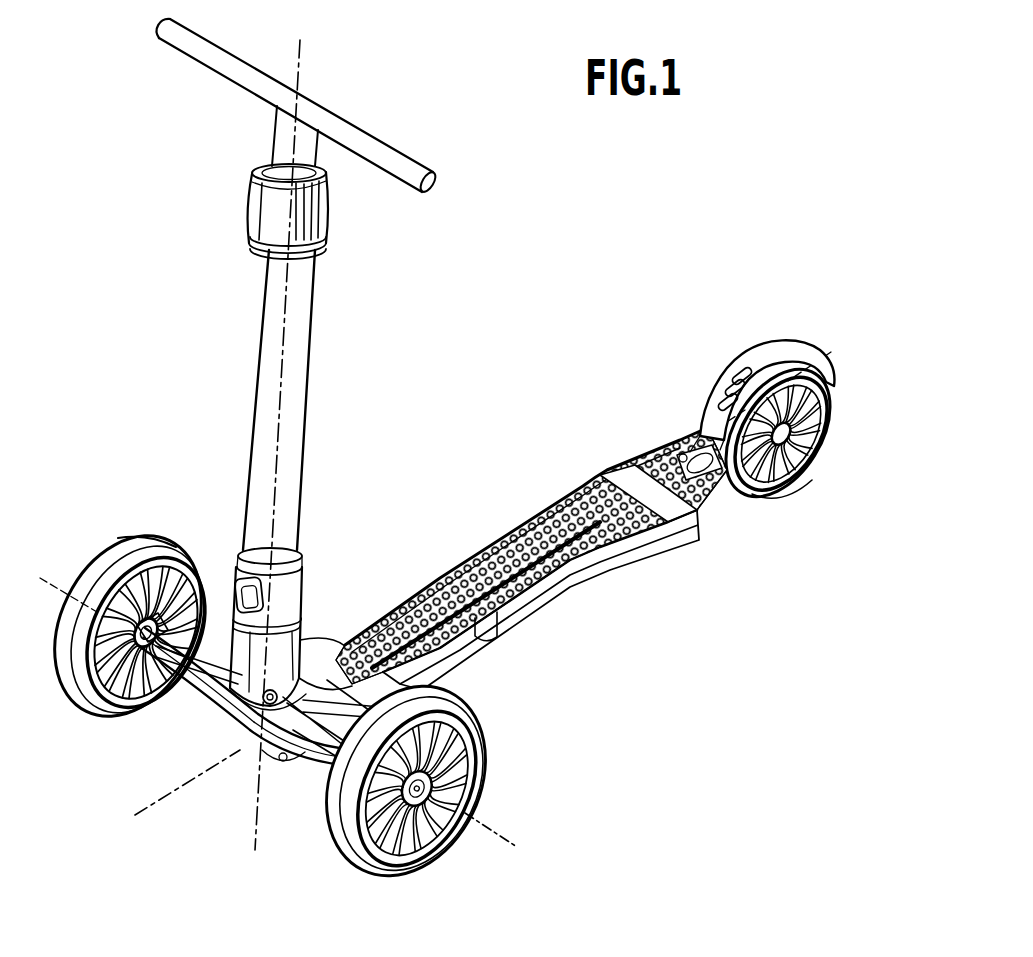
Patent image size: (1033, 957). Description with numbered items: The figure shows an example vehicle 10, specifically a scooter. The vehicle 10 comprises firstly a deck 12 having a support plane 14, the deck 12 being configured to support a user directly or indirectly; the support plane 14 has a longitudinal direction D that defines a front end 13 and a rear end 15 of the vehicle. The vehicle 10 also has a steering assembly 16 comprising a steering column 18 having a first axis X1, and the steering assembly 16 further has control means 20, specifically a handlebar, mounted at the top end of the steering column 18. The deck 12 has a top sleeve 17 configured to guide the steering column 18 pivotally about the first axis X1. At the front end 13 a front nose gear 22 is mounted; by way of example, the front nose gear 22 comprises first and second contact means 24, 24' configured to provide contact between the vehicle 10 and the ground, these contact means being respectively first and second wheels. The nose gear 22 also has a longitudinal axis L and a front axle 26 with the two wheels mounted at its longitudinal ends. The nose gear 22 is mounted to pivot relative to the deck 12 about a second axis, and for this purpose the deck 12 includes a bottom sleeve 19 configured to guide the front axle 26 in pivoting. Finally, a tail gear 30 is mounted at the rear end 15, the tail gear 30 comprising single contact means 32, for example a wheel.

The vehicle 10 is at (532, 338).
The deck 12 is at (468, 553).
The front end 13 is at (238, 767).
The support plane 14 is at (553, 583).
The rear end 15 is at (773, 330).
The steering assembly 16 is at (232, 290).
The top sleeve 17 is at (278, 647).
The steering column 18 is at (298, 360).
The bottom sleeve 19 is at (283, 762).
The control means 20 is at (393, 158).
The front nose gear 22 is at (70, 572).
The first contact means 24 is at (158, 500).
The second contact means 24' is at (434, 781).
The front axle 26 is at (175, 706).
The tail gear 30 is at (788, 494).
The single contact means 32 is at (718, 376).
The first axis X1 is at (302, 38).
The longitudinal direction D is at (207, 775).
The longitudinal axis L is at (489, 830).